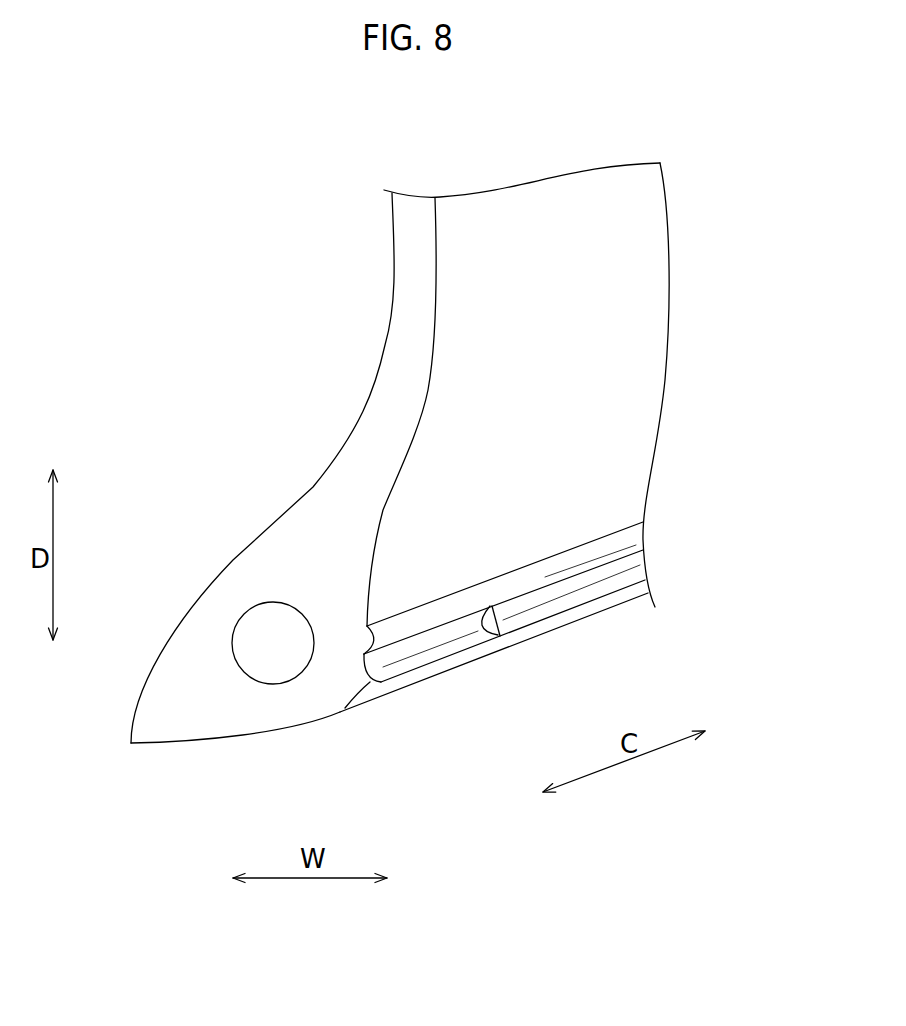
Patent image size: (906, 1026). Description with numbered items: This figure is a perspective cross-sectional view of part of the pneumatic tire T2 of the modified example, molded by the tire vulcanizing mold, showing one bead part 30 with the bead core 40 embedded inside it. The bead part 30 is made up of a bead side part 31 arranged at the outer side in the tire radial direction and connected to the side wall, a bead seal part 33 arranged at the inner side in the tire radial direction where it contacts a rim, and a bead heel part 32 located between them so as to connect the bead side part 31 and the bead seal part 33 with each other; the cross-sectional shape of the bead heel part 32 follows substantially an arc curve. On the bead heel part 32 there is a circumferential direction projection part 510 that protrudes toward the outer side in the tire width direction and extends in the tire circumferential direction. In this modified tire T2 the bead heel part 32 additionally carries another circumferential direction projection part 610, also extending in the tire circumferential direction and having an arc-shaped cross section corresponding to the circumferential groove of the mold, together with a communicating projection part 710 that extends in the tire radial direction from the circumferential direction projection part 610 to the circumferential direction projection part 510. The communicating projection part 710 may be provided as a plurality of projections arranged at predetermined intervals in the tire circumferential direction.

The bead part 30 is at (263, 567).
The bead side part 31 is at (370, 577).
The bead heel part 32 is at (348, 703).
The bead seal part 33 is at (257, 738).
The bead core 40 is at (260, 641).
The circumferential direction projection part 510 is at (376, 692).
The circumferential direction projection part 610 is at (425, 636).
The communicating projection part 710 is at (503, 645).
The pneumatic tire T2 is at (695, 234).